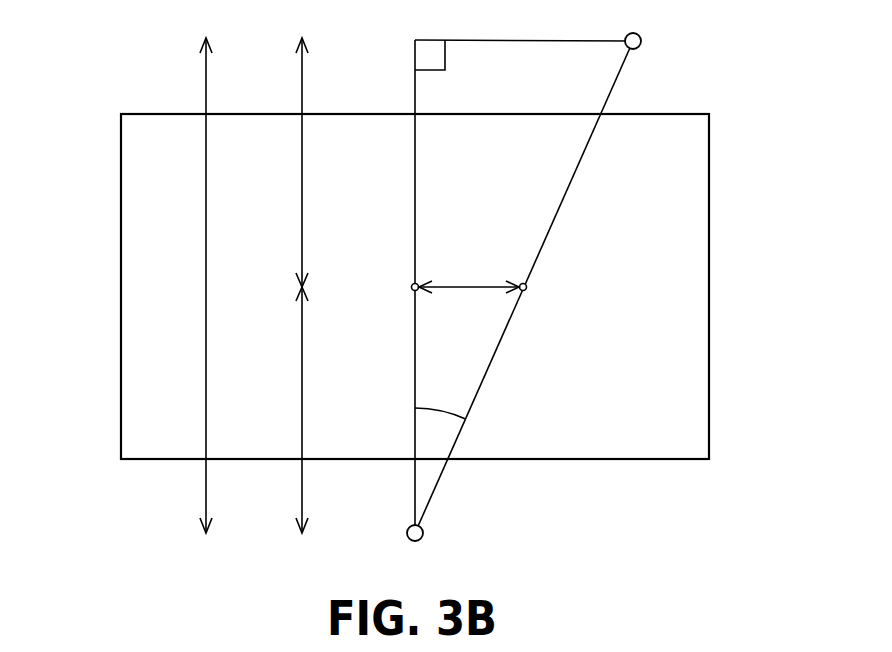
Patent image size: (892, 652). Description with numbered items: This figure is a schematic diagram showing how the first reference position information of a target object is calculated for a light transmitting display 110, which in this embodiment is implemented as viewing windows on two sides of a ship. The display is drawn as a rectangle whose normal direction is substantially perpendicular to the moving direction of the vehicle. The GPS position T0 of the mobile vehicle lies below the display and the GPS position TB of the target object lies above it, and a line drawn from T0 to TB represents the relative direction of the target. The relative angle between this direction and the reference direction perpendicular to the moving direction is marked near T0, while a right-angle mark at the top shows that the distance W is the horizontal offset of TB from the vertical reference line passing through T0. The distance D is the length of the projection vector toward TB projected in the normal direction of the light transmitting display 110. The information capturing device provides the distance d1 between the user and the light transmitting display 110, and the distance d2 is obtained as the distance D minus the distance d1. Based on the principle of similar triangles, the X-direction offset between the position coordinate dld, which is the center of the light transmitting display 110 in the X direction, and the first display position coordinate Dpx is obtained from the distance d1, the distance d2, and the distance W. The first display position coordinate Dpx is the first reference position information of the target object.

The light transmitting display 110 is at (121, 286).
The distance D is at (196, 285).
The distance d1 is at (289, 410).
The distance d2 is at (286, 162).
The distance W is at (524, 38).
The GPS position of the target object TB is at (650, 45).
The GPS position of the mobile vehicle T0 is at (433, 539).
The position coordinate dld is at (398, 287).
The first display position coordinate Dpx is at (548, 287).